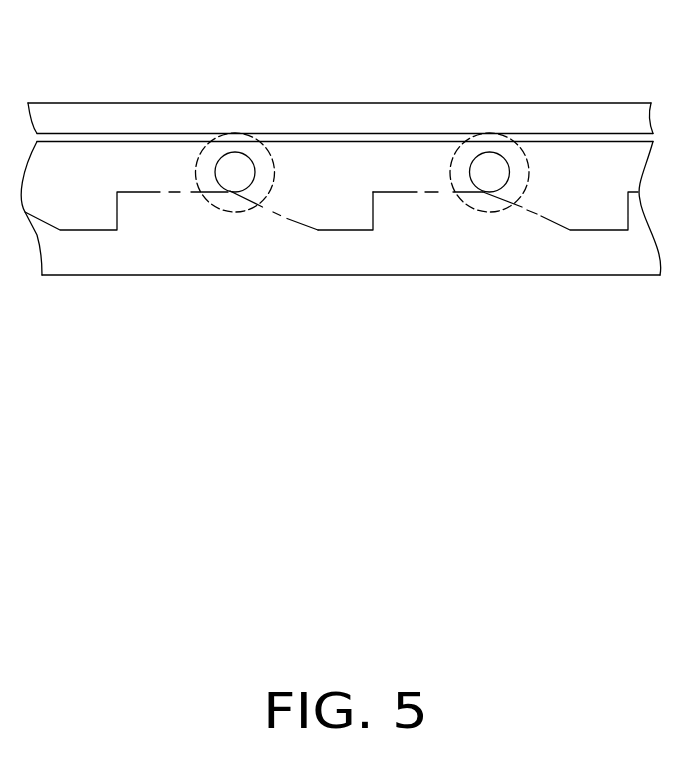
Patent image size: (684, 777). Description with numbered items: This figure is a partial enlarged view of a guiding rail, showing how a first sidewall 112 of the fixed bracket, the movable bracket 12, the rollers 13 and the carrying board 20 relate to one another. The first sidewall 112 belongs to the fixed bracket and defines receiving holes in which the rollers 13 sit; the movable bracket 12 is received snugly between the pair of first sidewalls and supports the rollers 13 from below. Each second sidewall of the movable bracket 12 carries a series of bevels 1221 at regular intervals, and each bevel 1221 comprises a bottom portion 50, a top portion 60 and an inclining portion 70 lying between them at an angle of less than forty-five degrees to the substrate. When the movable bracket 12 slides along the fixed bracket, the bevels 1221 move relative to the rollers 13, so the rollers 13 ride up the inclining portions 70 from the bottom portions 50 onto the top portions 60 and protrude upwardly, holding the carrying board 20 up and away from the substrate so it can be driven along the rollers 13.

The carrying board 20 is at (592, 128).
The movable bracket 12 is at (152, 245).
The first sidewall 112 is at (152, 173).
The roller 13 is at (503, 151).
The bevel 1221 is at (264, 303).
The top portion 60 is at (230, 191).
The inclining portion 70 is at (273, 212).
The bottom portion 50 is at (318, 231).